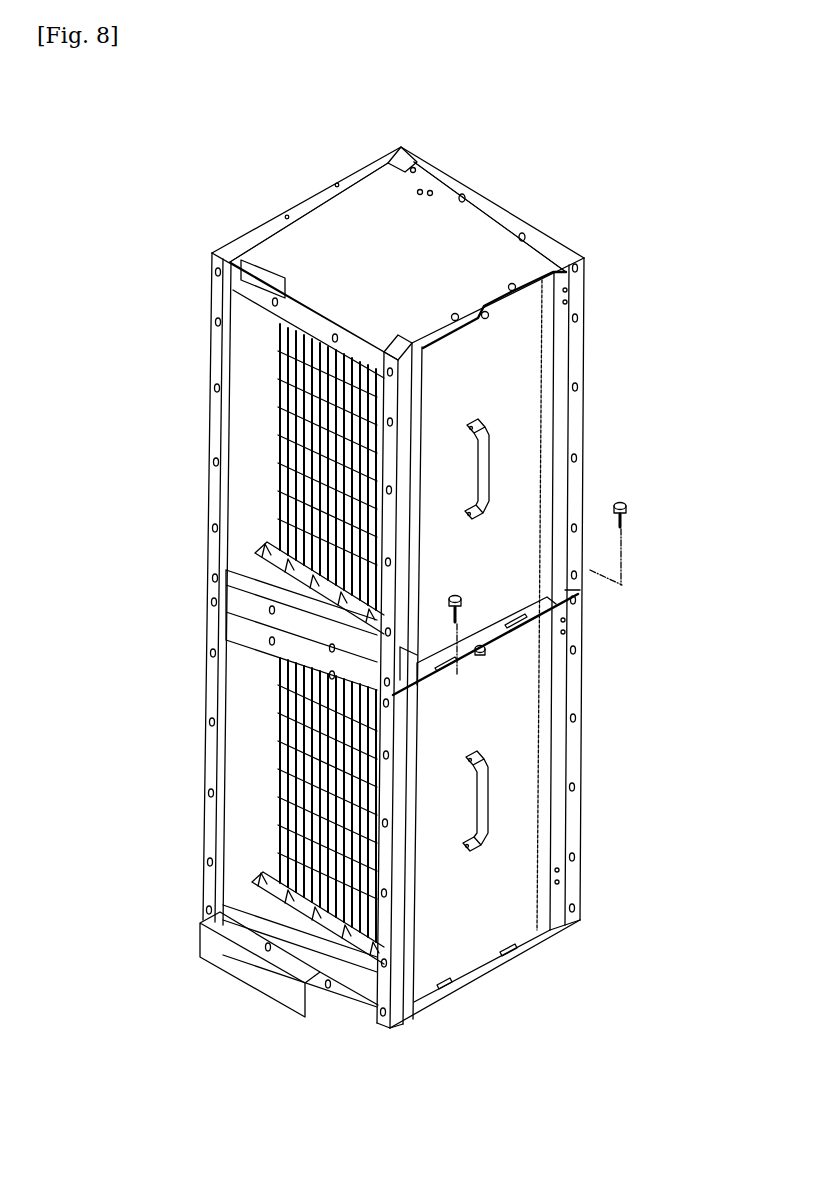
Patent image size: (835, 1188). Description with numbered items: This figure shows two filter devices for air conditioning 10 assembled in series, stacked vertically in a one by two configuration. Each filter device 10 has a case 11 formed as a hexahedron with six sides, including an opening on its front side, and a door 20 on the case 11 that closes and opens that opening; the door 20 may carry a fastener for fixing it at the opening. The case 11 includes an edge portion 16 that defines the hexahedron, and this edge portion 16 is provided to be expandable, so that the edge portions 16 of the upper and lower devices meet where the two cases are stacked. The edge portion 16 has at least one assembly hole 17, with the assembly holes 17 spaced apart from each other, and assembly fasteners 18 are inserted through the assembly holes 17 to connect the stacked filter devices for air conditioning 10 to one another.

The filter device for air conditioning 10 is at (195, 352).
The case 11 is at (385, 163).
The door 20 is at (522, 363).
The edge portion 16 is at (573, 545).
The assembly hole 17 is at (564, 589).
The assembly fastener 18 is at (626, 522).